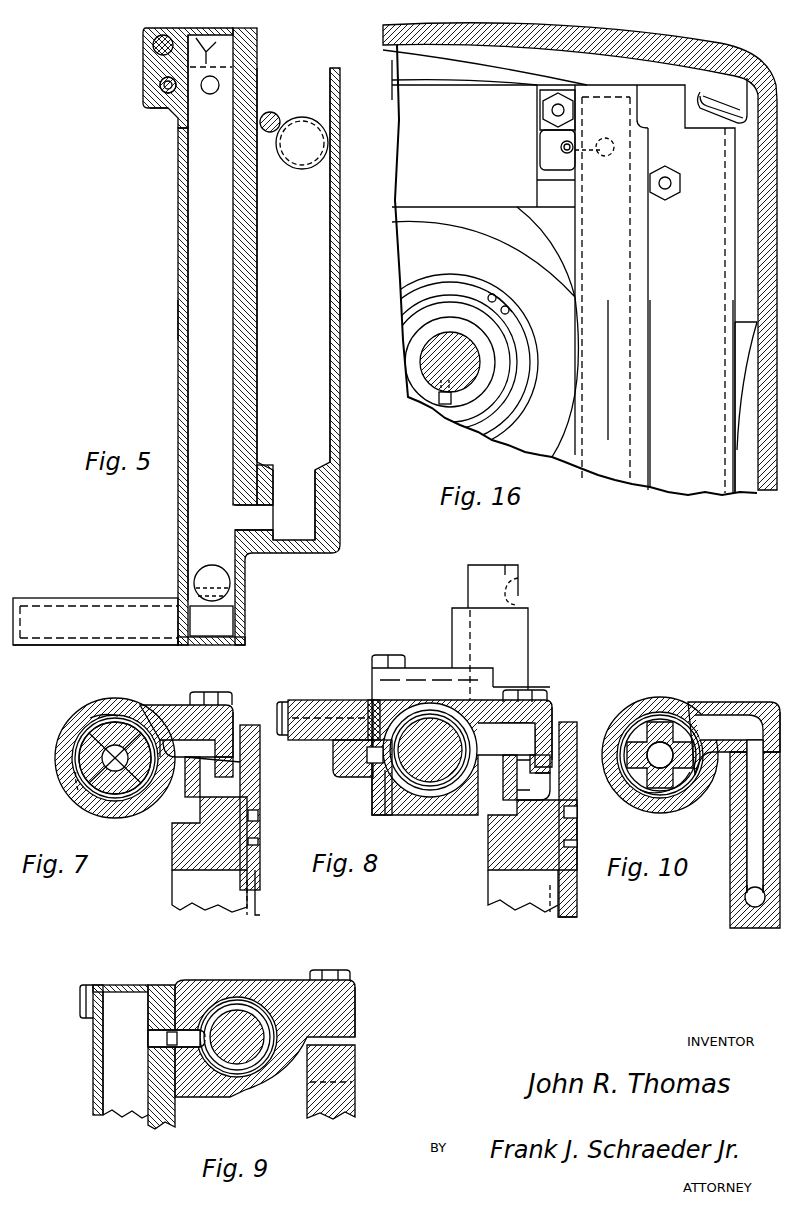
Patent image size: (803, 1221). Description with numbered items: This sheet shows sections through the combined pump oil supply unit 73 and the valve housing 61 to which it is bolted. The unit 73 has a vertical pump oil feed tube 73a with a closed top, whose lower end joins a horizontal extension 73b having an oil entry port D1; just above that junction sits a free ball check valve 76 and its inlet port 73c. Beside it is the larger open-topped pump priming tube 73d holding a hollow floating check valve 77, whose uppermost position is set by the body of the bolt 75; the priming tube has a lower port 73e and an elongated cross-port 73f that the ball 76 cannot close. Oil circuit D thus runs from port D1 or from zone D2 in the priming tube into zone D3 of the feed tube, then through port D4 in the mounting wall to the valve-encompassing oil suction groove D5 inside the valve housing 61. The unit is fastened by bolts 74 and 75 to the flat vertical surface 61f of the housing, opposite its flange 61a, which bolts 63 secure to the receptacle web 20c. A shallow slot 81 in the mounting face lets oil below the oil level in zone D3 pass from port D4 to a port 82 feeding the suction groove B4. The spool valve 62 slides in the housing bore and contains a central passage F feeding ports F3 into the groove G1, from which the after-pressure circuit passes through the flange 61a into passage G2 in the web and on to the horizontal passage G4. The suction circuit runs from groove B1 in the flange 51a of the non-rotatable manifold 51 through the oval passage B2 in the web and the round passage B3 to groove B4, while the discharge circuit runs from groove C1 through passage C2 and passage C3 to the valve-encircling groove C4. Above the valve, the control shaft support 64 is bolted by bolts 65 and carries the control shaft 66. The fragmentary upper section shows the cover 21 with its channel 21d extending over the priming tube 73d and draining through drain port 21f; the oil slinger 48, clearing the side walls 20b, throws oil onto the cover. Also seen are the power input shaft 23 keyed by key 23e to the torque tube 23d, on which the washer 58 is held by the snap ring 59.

In FIG. 5, the pump oil supply unit 73 is at (250, 69).
In FIG. 16, the pump oil supply unit 73 is at (645, 460).
In FIG. 8, the pump oil supply unit 73 is at (333, 698).
In FIG. 9, the pump oil supply unit 73 is at (165, 982).
In FIG. 5, the pump oil feed tube 73a is at (178, 338).
In FIG. 16, the pump oil feed tube 73a is at (610, 440).
In FIG. 5, the horizontal extension 73b is at (97, 600).
In FIG. 5, the check valve inlet port 73c is at (213, 604).
In FIG. 5, the pump priming tube 73d is at (340, 305).
In FIG. 16, the pump priming tube 73d is at (690, 450).
In FIG. 5, the port 73e is at (284, 493).
In FIG. 5, the cross-port 73f is at (255, 523).
In FIG. 5, the bolt 74 is at (153, 46).
In FIG. 16, the bolt 74 is at (556, 110).
In FIG. 8, the bolt 74 is at (284, 705).
In FIG. 9, the bolt 74 is at (87, 1005).
In FIG. 5, the bolt 75 is at (273, 114).
In FIG. 16, the bolt 75 is at (670, 190).
In FIG. 5, the free ball check valve 76 is at (200, 580).
In FIG. 5, the floating check valve 77 is at (320, 141).
In FIG. 5, the slot 81 is at (150, 112).
In FIG. 16, the slot 81 is at (560, 150).
In FIG. 8, the slot 81 is at (377, 755).
In FIG. 9, the slot 81 is at (167, 1037).
In FIG. 5, the port 82 is at (158, 88).
In FIG. 16, the port 82 is at (566, 147).
In FIG. 8, the port 82 is at (370, 770).
In FIG. 5, the oil entry port D1 is at (58, 640).
In FIG. 5, the zone D2 is at (290, 253).
In FIG. 5, the zone D3 is at (218, 220).
In FIG. 9, the zone D3 is at (130, 1093).
In FIG. 5, the port D4 is at (207, 92).
In FIG. 16, the port D4 is at (606, 140).
In FIG. 9, the port D4 is at (150, 1045).
In FIG. 9, the oil suction groove D5 is at (210, 1074).
In FIG. 16, the receptacle cover 21 is at (684, 46).
In FIG. 16, the U-shaped channel 21d is at (745, 98).
In FIG. 16, the drain port 21f is at (712, 112).
In FIG. 16, the oil slinger 48 is at (410, 70).
In FIG. 16, the valve housing 61 is at (393, 102).
In FIG. 7, the valve housing 61 is at (146, 706).
In FIG. 8, the valve housing 61 is at (471, 704).
In FIG. 10, the valve housing 61 is at (691, 705).
In FIG. 9, the valve housing 61 is at (270, 990).
In FIG. 7, the flange 61a is at (232, 705).
In FIG. 8, the flange 61a is at (549, 706).
In FIG. 10, the flange 61a is at (770, 712).
In FIG. 9, the flange 61a is at (341, 1011).
In FIG. 16, the flat vertical surface 61f is at (553, 183).
In FIG. 8, the flat vertical surface 61f is at (373, 793).
In FIG. 16, the washer 58 is at (470, 283).
In FIG. 16, the retaining snap ring 59 is at (510, 312).
In FIG. 16, the power input shaft 23 is at (420, 362).
In FIG. 16, the torque tube 23d is at (437, 317).
In FIG. 16, the key 23e is at (440, 398).
In FIG. 16, the side wall 20b is at (763, 495).
In FIG. 7, the receptacle web 20c is at (218, 762).
In FIG. 8, the receptacle web 20c is at (520, 788).
In FIG. 10, the receptacle web 20c is at (742, 914).
In FIG. 9, the receptacle web 20c is at (340, 1090).
In FIG. 7, the spool valve 62 is at (86, 748).
In FIG. 8, the spool valve 62 is at (434, 792).
In FIG. 10, the spool valve 62 is at (637, 724).
In FIG. 9, the spool valve 62 is at (235, 1010).
In FIG. 7, the bolt 63 is at (208, 693).
In FIG. 8, the bolt 63 is at (531, 692).
In FIG. 9, the bolt 63 is at (346, 976).
In FIG. 8, the control shaft support 64 is at (527, 666).
In FIG. 8, the bolt 65 is at (392, 666).
In FIG. 8, the control shaft 66 is at (507, 568).
In FIG. 7, the non-rotatable manifold 51 is at (174, 860).
In FIG. 8, the non-rotatable manifold 51 is at (499, 851).
In FIG. 7, the manifold flange 51a is at (248, 731).
In FIG. 8, the manifold flange 51a is at (566, 731).
In FIG. 7, the annular groove B1 is at (253, 816).
In FIG. 8, the fluid suction passage B2 is at (568, 810).
In FIG. 8, the round passage B3 is at (528, 742).
In FIG. 8, the suction groove B4 is at (400, 817).
In FIG. 8, the annular groove C1 is at (575, 847).
In FIG. 7, the fluid discharge passage C2 is at (253, 842).
In FIG. 7, the round passage C3 is at (188, 792).
In FIG. 7, the discharge groove C4 is at (92, 712).
In FIG. 10, the passage F is at (666, 758).
In FIG. 7, the ports F3 is at (70, 786).
In FIG. 10, the ports F3 is at (660, 784).
In FIG. 10, the groove G1 is at (661, 704).
In FIG. 10, the passage G2 is at (757, 856).
In FIG. 10, the horizontal passage G4 is at (752, 896).